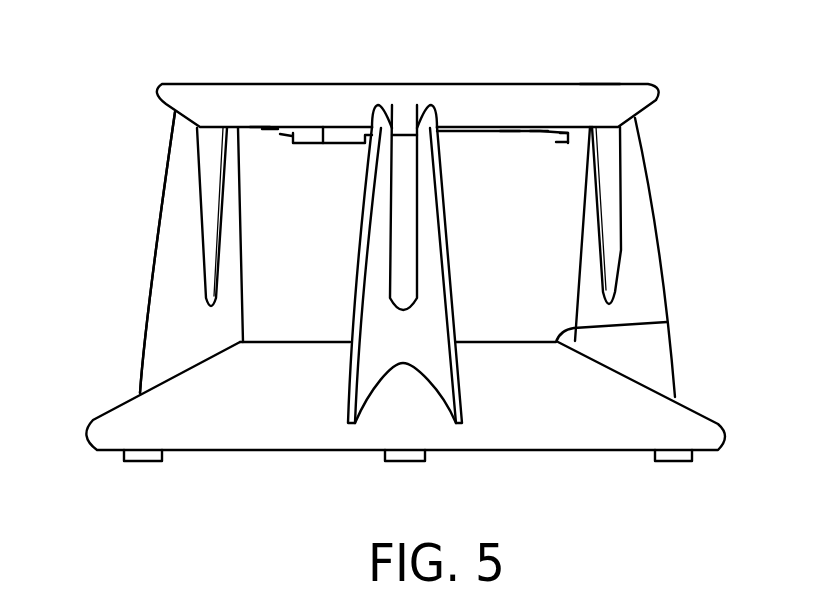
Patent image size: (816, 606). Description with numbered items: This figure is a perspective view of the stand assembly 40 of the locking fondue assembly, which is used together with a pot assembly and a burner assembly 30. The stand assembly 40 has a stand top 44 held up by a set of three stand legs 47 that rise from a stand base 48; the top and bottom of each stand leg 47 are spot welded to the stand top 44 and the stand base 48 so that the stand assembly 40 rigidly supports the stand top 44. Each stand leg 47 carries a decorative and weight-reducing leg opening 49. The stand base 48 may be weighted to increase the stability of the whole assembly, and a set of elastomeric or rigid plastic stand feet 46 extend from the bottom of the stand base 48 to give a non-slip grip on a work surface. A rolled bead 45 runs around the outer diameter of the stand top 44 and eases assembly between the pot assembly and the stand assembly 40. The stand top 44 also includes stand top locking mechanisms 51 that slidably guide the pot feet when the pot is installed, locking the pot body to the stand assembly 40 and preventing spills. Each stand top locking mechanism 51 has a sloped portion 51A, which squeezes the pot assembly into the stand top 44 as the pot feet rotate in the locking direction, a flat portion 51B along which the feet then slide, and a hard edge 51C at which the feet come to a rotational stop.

The burner assembly 30 is at (304, 337).
The stand assembly 40 is at (126, 248).
The stand top 44 is at (614, 40).
The rolled bead 45 is at (658, 91).
The stand feet 46 is at (680, 462).
The stand legs 47 is at (166, 168).
The stand base 48 is at (667, 322).
The leg opening 49 is at (389, 287).
The stand top locking mechanism 51 is at (323, 144).
The sloped portion 51A is at (257, 128).
The flat portion 51B is at (262, 130).
The edge 51C is at (280, 134).